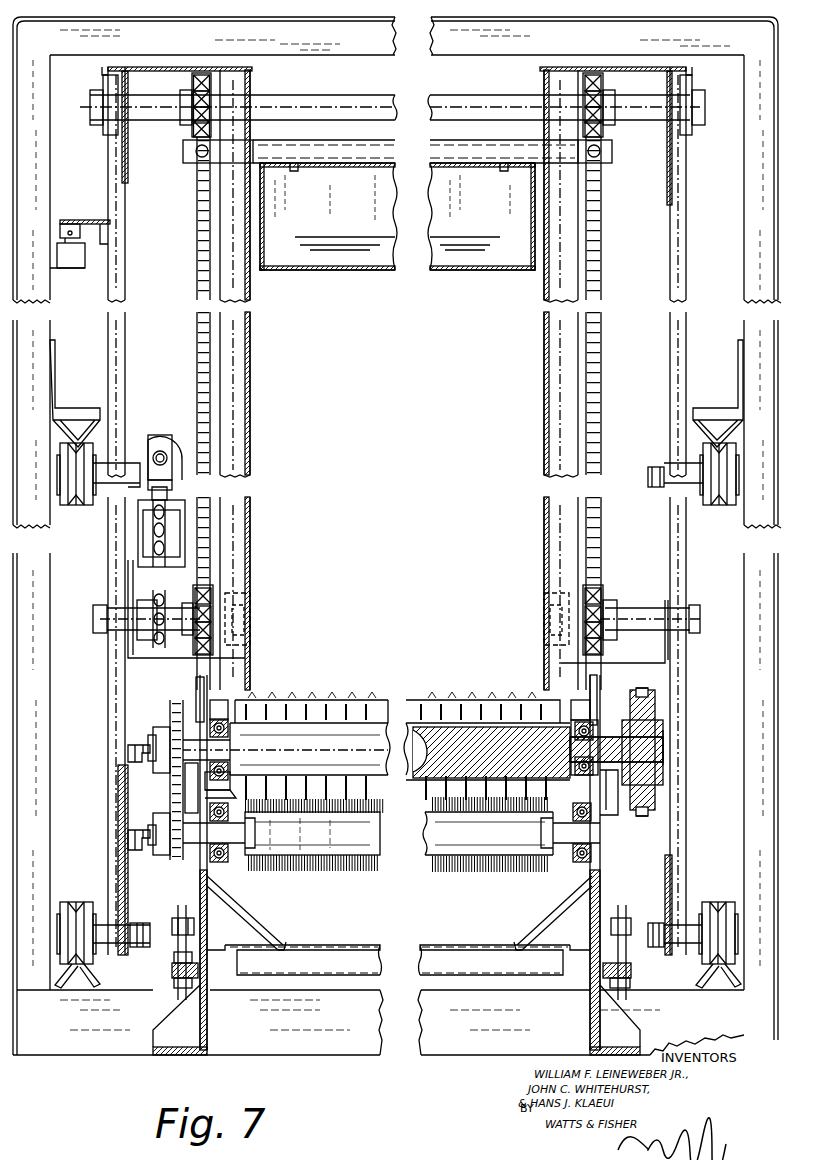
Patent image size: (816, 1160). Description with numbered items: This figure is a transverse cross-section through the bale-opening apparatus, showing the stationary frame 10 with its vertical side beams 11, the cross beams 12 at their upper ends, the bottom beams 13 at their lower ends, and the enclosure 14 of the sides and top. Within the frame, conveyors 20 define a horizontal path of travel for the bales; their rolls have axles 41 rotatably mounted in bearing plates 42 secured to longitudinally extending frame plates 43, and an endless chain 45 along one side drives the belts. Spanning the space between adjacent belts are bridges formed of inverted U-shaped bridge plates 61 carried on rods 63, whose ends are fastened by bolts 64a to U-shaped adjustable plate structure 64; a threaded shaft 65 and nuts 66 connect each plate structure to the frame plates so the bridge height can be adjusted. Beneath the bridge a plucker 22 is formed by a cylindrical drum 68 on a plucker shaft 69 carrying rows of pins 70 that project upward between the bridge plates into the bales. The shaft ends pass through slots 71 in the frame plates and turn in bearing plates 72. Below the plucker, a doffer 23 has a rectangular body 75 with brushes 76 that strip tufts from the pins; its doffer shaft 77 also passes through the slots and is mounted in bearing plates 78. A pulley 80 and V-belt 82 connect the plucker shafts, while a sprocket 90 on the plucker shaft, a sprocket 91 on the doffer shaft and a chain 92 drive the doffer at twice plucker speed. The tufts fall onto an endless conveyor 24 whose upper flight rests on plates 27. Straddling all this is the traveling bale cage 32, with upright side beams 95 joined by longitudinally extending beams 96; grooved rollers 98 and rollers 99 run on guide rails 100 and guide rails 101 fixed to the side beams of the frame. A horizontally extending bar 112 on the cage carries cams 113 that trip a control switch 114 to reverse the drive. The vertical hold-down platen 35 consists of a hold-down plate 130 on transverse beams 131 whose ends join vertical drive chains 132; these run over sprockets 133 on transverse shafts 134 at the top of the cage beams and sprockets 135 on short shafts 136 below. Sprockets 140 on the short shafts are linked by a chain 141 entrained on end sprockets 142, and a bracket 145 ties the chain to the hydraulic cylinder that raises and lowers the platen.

The stationary frame 10 is at (172, 17).
The side beams 11 is at (37, 104).
The cross beams 12 is at (340, 36).
The bottom beams 13 is at (108, 1048).
The enclosure 14 is at (578, 18).
The conveyors 20 is at (432, 700).
The plucker 22 is at (305, 720).
The doffer 23 is at (356, 840).
The endless conveyor 24 is at (364, 946).
The plates 27 is at (430, 962).
The traveling bale cage 32 is at (260, 346).
The vertical hold-down platen 35 is at (488, 272).
The axles 41 is at (224, 704).
The bearing plates 42 is at (200, 692).
The frame plates 43 is at (208, 912).
The endless chain 45 is at (137, 745).
The bridge plates 61 is at (258, 704).
The rods 63 is at (226, 792).
The adjustable plate structure 64 is at (198, 872).
The bolts 64a is at (620, 800).
The threaded shaft 65 is at (178, 950).
The nuts 66 is at (172, 926).
The cylindrical drum 68 is at (356, 726).
The plucker shaft 69 is at (200, 738).
The pins 70 is at (500, 700).
The slots 71 is at (226, 762).
The bearing plates 72 is at (222, 730).
The rectangular body 75 is at (300, 842).
The brushes 76 is at (470, 810).
The doffer shaft 77 is at (218, 852).
The bearing plates 78 is at (222, 862).
The pulley 80 is at (655, 718).
The V-belt 82 is at (648, 690).
The sprocket 90 is at (176, 706).
The sprocket 91 is at (175, 856).
The chain 92 is at (188, 800).
The side beams 95 is at (120, 358).
The longitudinally extending beams 96 is at (130, 166).
The rollers 98 is at (78, 902).
The rollers 99 is at (74, 506).
The guide rails 100 is at (82, 988).
The guide rails 101 is at (74, 420).
The horizontally extending bar 112 is at (93, 218).
The cams 113 is at (76, 226).
The control switch 114 is at (72, 252).
The hold-down plate 130 is at (375, 266).
The beams 131 is at (345, 152).
The drive chains 132 is at (195, 320).
The sprockets 133 is at (190, 126).
The transverse shafts 134 is at (450, 106).
The sprockets 135 is at (212, 590).
The short shafts 136 is at (102, 632).
The sprockets 140 is at (145, 606).
The chain 141 is at (172, 492).
The end sprockets 142 is at (150, 560).
The bracket 145 is at (162, 438).